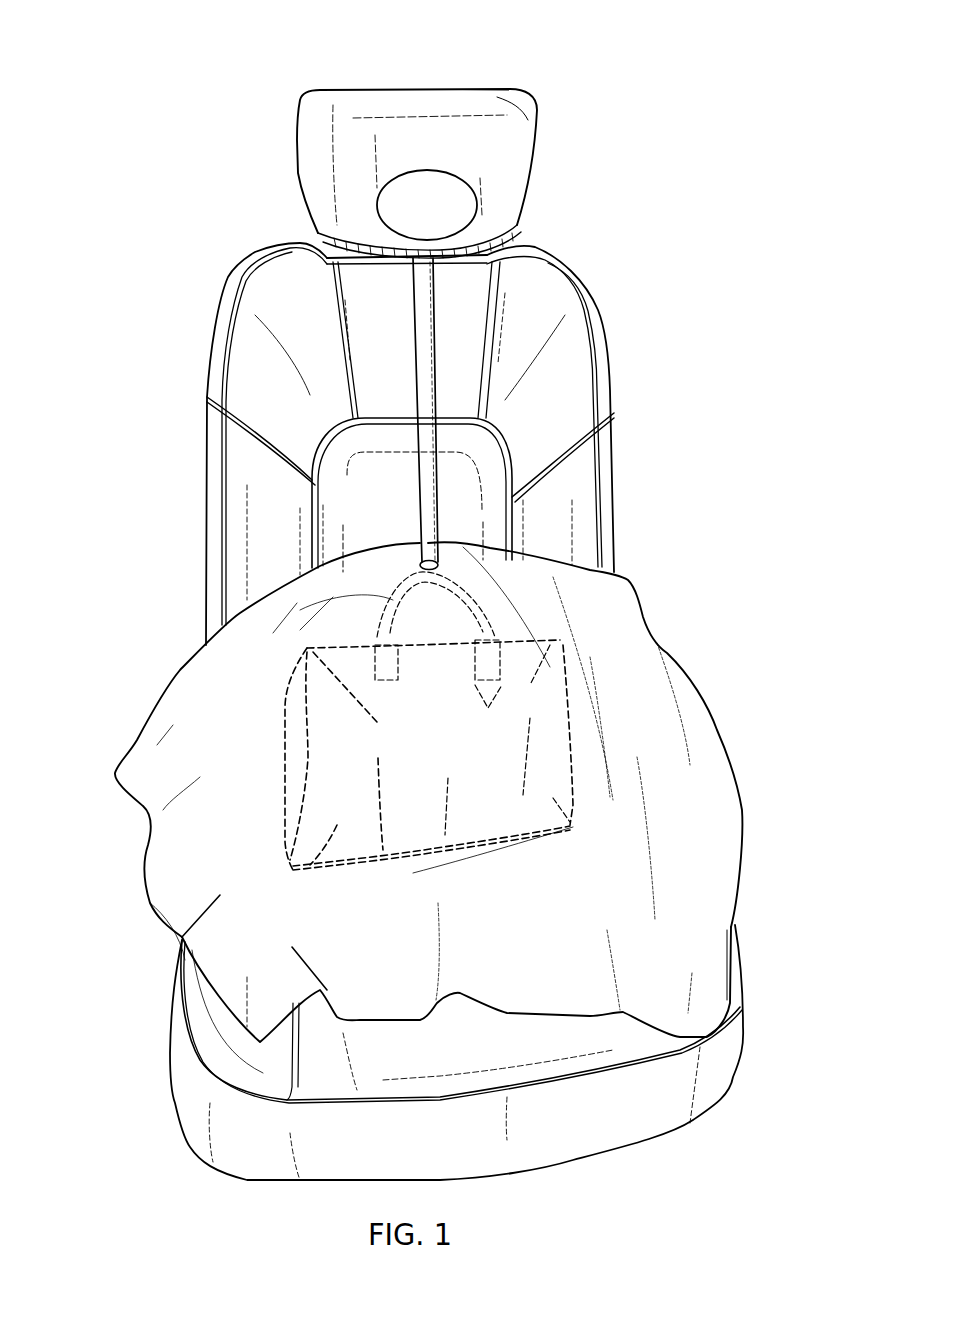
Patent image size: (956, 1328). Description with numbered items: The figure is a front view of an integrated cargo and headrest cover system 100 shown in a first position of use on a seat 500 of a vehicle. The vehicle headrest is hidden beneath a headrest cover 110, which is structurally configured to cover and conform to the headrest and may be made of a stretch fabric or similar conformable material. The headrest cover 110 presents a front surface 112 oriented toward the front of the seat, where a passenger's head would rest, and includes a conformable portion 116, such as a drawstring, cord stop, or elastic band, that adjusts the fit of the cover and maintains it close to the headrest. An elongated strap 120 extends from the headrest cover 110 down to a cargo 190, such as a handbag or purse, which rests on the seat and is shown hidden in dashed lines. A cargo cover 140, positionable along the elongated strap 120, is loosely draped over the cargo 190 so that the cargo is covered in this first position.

The integrated cargo and headrest cover system 100 is at (152, 40).
The headrest cover 110 is at (562, 58).
The front surface 112 is at (485, 147).
The conformable portion 116 is at (513, 237).
The elongated strap 120 is at (413, 293).
The cargo cover 140 is at (663, 743).
The cargo 190 is at (288, 725).
The seat 500 is at (600, 354).